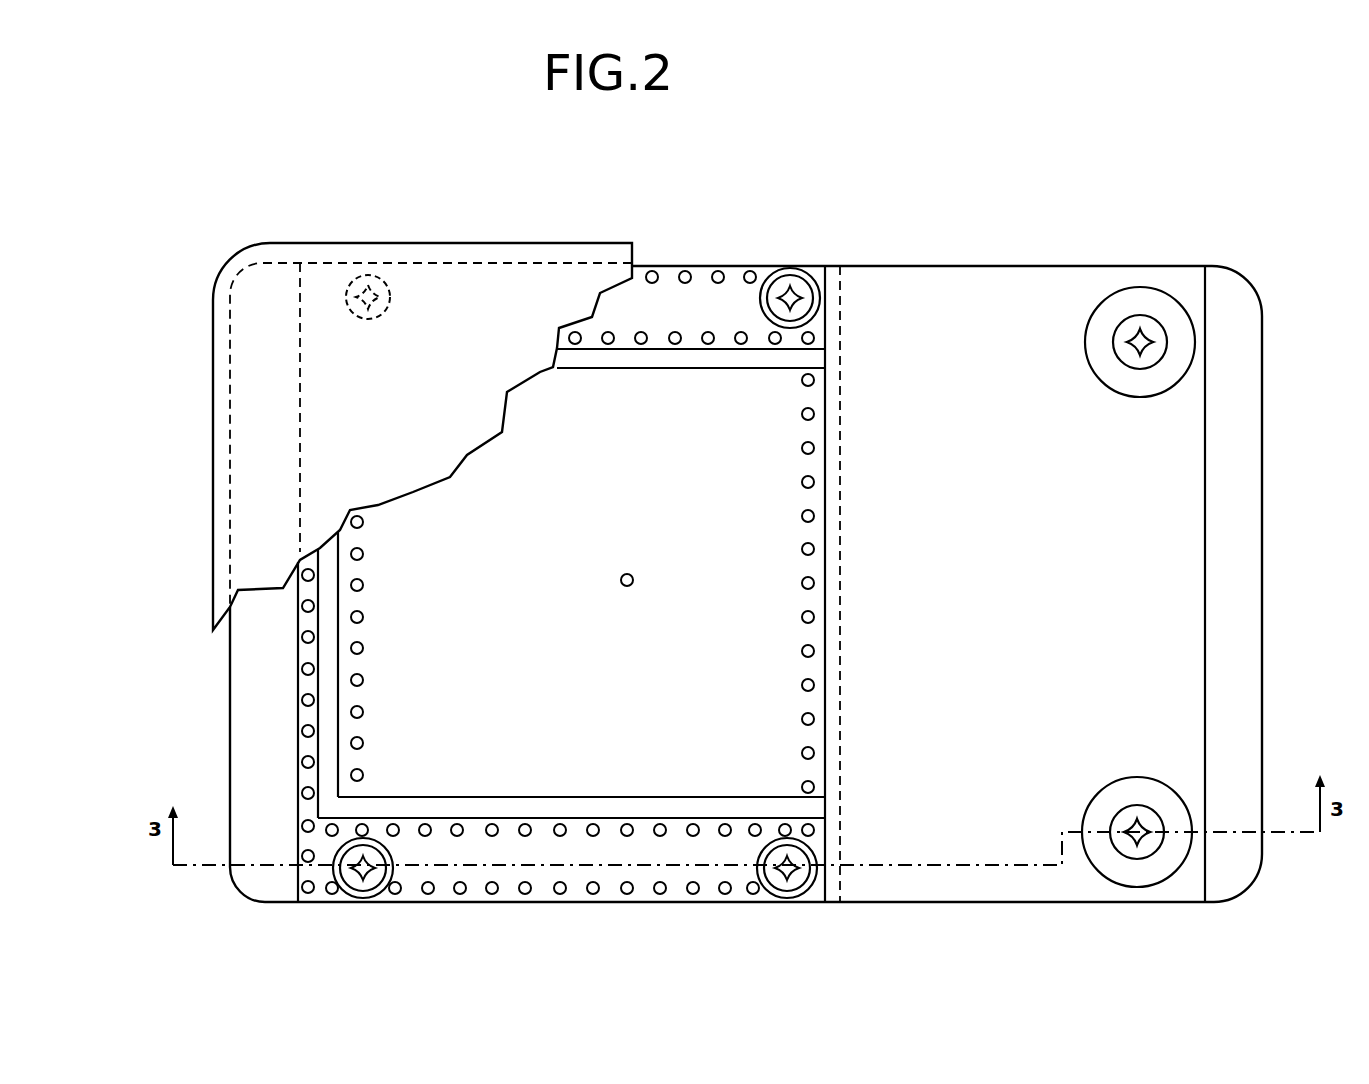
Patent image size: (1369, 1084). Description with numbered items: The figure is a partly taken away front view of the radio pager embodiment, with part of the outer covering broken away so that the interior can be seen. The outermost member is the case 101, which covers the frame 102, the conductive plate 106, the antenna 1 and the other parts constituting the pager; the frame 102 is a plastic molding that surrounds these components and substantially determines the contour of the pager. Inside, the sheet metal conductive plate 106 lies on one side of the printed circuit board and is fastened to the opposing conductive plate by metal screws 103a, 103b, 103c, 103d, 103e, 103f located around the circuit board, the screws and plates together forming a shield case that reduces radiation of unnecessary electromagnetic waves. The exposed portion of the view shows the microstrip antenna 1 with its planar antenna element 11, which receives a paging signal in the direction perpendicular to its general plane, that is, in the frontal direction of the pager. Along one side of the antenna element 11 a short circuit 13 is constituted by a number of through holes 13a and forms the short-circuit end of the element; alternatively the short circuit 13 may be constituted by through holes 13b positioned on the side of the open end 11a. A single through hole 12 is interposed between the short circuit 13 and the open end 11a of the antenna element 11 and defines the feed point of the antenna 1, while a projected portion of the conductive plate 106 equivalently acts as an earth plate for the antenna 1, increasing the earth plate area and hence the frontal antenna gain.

The microstrip antenna 1 is at (638, 241).
The antenna element 11 is at (562, 405).
The open end 11a is at (340, 657).
The through hole 12 is at (627, 574).
The short circuit 13 is at (787, 787).
The through holes 13a is at (814, 682).
The through holes 13b is at (357, 713).
The case 101 is at (313, 243).
The frame 102 is at (1263, 405).
The metal screw 103a is at (363, 888).
The metal screw 103b is at (783, 897).
The metal screw 103c is at (384, 313).
The metal screw 103d is at (821, 281).
The metal screw 103e is at (1130, 860).
The metal screw 103f is at (1168, 290).
The conductive plate 106 is at (1015, 265).